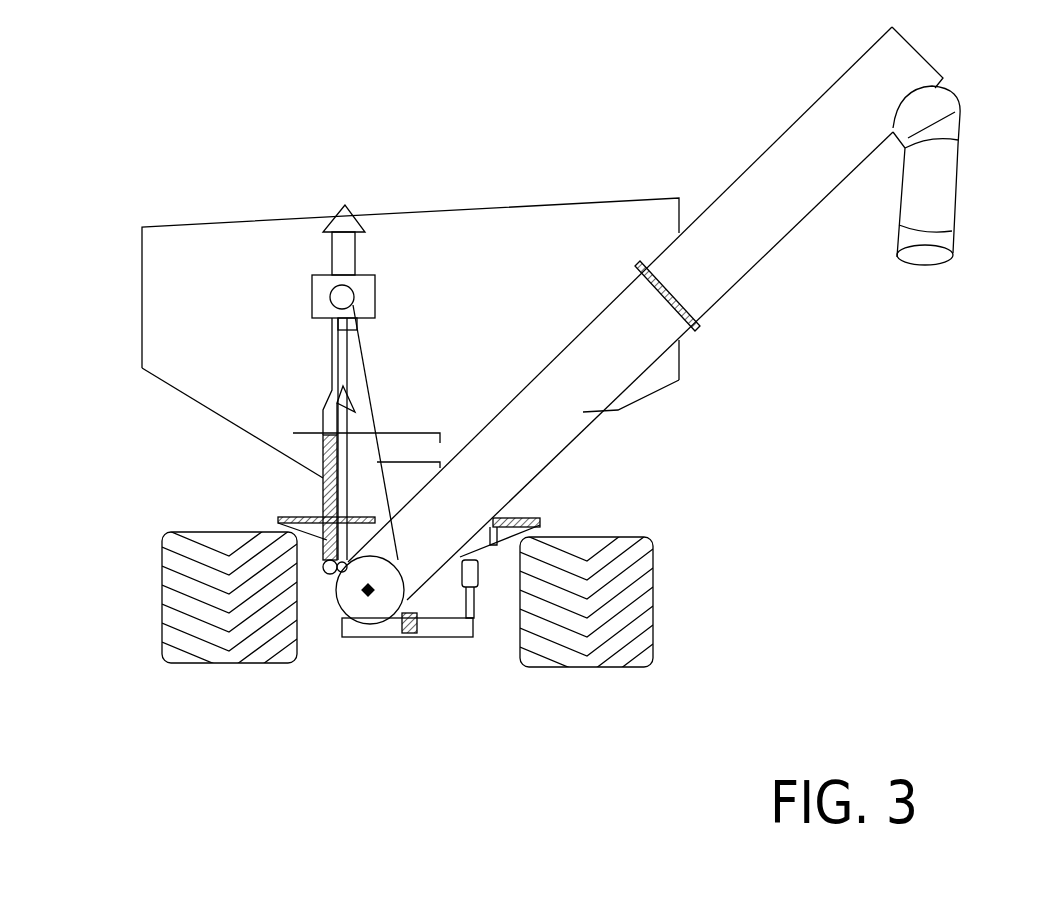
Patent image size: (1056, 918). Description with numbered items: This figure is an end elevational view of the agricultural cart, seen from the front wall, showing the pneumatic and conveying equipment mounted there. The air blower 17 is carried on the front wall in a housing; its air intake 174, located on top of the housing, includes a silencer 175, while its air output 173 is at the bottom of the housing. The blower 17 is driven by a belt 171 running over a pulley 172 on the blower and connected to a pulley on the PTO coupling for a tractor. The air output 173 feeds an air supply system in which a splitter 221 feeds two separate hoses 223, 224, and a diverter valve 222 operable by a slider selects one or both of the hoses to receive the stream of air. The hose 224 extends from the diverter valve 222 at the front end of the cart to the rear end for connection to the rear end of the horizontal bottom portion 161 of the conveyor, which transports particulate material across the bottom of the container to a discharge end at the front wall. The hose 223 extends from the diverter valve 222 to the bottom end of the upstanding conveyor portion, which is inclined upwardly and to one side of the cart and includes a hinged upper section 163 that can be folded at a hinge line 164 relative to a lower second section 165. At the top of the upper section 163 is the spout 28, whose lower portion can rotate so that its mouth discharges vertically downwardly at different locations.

The air blower 17 is at (402, 228).
The silencer 175 is at (357, 217).
The air intake 174 is at (330, 253).
The pulley 172 is at (312, 296).
The belt 171 is at (373, 357).
The air output 173 is at (338, 367).
The splitter 221 is at (355, 398).
The hose 224 is at (323, 500).
The horizontal bottom portion 161 is at (375, 573).
The diverter valve 222 is at (380, 437).
The hose 223 is at (338, 467).
The hinged upper section 163 is at (770, 237).
The hinge line 164 is at (700, 333).
The lower second section 165 is at (603, 410).
The spout 28 is at (950, 170).